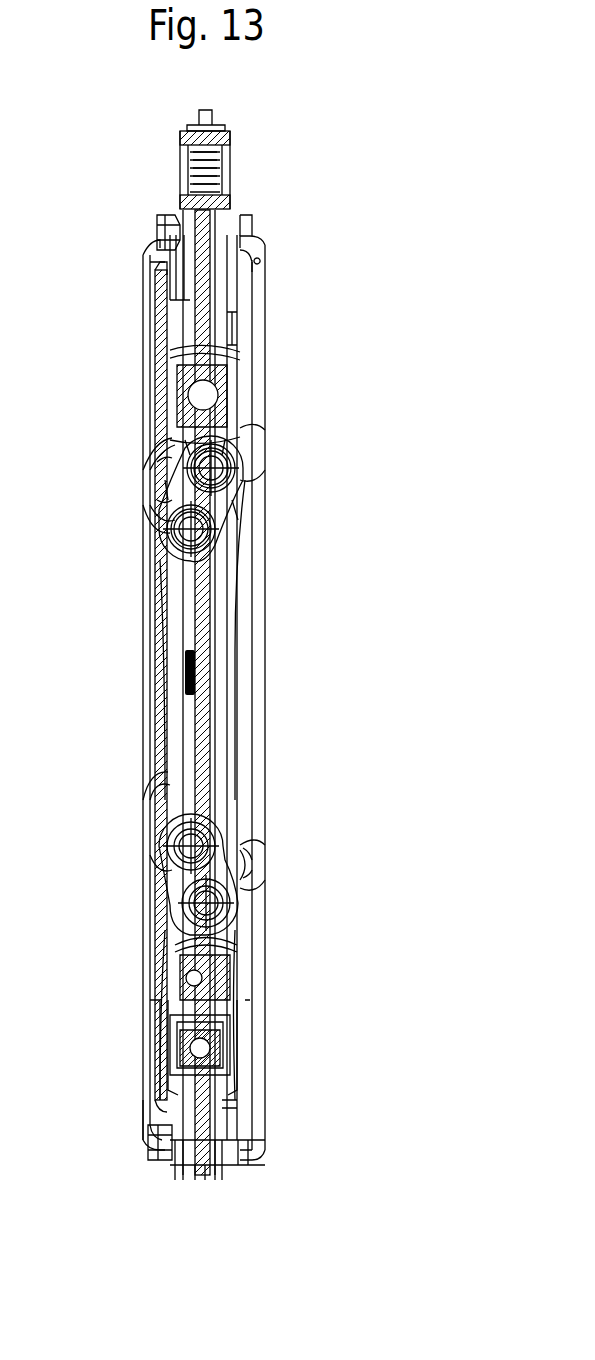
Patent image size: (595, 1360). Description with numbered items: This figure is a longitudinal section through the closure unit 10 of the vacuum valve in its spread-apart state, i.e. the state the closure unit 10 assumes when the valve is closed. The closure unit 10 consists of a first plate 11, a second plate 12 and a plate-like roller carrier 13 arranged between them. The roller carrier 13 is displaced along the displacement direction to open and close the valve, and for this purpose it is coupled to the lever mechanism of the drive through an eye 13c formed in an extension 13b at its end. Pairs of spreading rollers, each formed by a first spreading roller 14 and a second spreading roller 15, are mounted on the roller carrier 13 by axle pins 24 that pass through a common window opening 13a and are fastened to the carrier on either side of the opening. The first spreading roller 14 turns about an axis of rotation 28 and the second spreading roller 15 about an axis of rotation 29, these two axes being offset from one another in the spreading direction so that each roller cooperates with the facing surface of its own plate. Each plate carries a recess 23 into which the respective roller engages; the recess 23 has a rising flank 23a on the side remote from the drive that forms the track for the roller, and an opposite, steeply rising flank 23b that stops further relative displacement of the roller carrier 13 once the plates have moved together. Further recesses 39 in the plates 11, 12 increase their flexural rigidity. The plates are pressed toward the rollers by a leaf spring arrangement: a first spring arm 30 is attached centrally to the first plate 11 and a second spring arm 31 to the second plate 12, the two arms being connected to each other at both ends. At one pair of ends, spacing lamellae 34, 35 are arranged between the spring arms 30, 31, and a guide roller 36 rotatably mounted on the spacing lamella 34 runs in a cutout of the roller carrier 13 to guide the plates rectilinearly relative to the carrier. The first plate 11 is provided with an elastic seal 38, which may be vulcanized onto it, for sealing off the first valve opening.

The closure unit 10 is at (131, 1166).
The first plate 11 is at (242, 930).
The second plate 12 is at (156, 975).
The roller carrier 13 is at (200, 745).
The window opening 13a is at (200, 440).
The extension 13b is at (212, 118).
The eye 13c is at (210, 166).
The first spreading roller 14 is at (240, 470).
The second spreading roller 15 is at (186, 550).
The recess 23 is at (160, 490).
The rising flank 23a is at (170, 500).
The flank 23b is at (170, 465).
The axle pin 24 is at (238, 460).
The axis of rotation 28 is at (214, 470).
The axis of rotation 29 is at (200, 525).
The first spring arm 30 is at (226, 332).
The second spring arm 31 is at (175, 325).
The spacing lamella 34 is at (200, 1148).
The spacing lamella 35 is at (176, 1145).
The guide roller 36 is at (212, 1058).
The seal 38 is at (258, 258).
The further recess 39 is at (240, 1022).